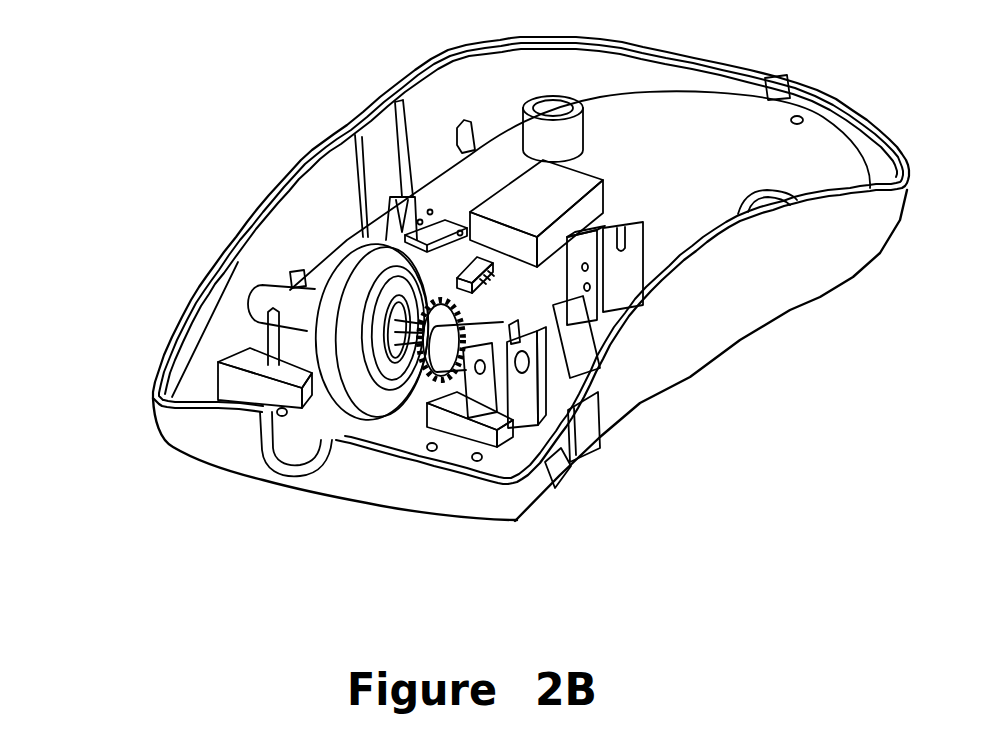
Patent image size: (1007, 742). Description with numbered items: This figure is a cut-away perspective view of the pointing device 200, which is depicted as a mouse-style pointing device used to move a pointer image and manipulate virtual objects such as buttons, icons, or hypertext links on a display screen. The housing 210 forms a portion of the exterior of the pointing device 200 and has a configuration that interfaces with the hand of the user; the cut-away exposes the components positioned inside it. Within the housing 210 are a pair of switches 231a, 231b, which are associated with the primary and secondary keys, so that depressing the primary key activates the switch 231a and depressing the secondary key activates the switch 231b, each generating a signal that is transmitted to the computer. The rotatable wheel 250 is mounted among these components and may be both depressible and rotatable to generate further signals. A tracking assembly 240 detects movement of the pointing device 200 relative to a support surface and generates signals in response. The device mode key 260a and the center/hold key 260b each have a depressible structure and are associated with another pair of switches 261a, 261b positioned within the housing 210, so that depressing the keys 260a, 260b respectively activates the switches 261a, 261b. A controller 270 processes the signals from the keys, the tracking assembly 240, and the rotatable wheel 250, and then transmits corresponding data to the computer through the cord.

The pointing device 200 is at (138, 370).
The housing 210 is at (777, 298).
The switch 231a is at (473, 412).
The switch 231b is at (273, 370).
The tracking assembly 240 is at (588, 207).
The rotatable wheel 250 is at (336, 268).
The device mode key 260a is at (555, 468).
The center/hold key 260b is at (587, 433).
The switch 261a is at (522, 465).
The switch 261b is at (560, 392).
The controller 270 is at (482, 290).